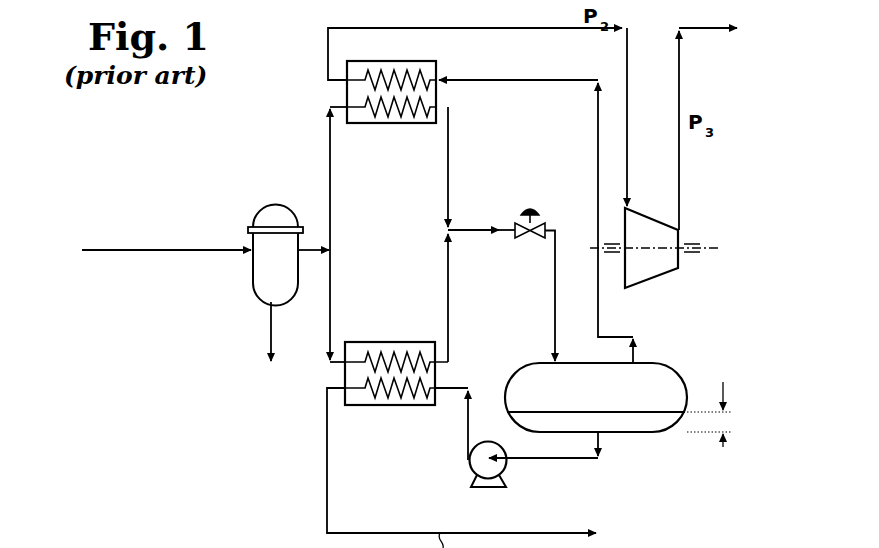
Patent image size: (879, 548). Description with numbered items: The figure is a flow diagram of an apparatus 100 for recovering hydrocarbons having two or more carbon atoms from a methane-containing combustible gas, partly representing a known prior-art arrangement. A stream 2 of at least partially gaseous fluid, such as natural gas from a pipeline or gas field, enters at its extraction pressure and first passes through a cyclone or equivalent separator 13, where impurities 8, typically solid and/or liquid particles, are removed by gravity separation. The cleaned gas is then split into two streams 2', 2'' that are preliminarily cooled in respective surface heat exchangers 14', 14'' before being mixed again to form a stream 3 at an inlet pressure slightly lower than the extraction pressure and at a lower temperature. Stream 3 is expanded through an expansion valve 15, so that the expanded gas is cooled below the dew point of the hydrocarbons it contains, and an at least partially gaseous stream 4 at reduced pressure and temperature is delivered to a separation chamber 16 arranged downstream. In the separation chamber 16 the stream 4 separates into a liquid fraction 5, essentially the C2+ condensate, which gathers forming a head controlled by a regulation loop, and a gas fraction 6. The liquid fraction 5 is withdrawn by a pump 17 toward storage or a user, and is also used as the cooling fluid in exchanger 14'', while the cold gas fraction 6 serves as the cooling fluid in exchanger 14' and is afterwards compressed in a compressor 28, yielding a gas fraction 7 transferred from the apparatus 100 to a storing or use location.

The apparatus 100 is at (137, 162).
The stream 2 is at (166, 258).
The first split stream 2' is at (311, 178).
The second split stream 2'' is at (360, 306).
The separator 13 is at (257, 298).
The impurities 8 is at (270, 317).
The surface heat exchanger 14' is at (386, 129).
The surface heat exchanger 14'' is at (392, 409).
The gas fraction 6 is at (499, 31).
The gas fraction 7 is at (697, 32).
The stream 3 is at (462, 233).
The expansion valve 15 is at (547, 204).
The stream 4 is at (557, 324).
The separation chamber 16 is at (678, 372).
The liquid fraction 5 is at (542, 459).
The pump 17 is at (467, 468).
The compressor 28 is at (667, 275).